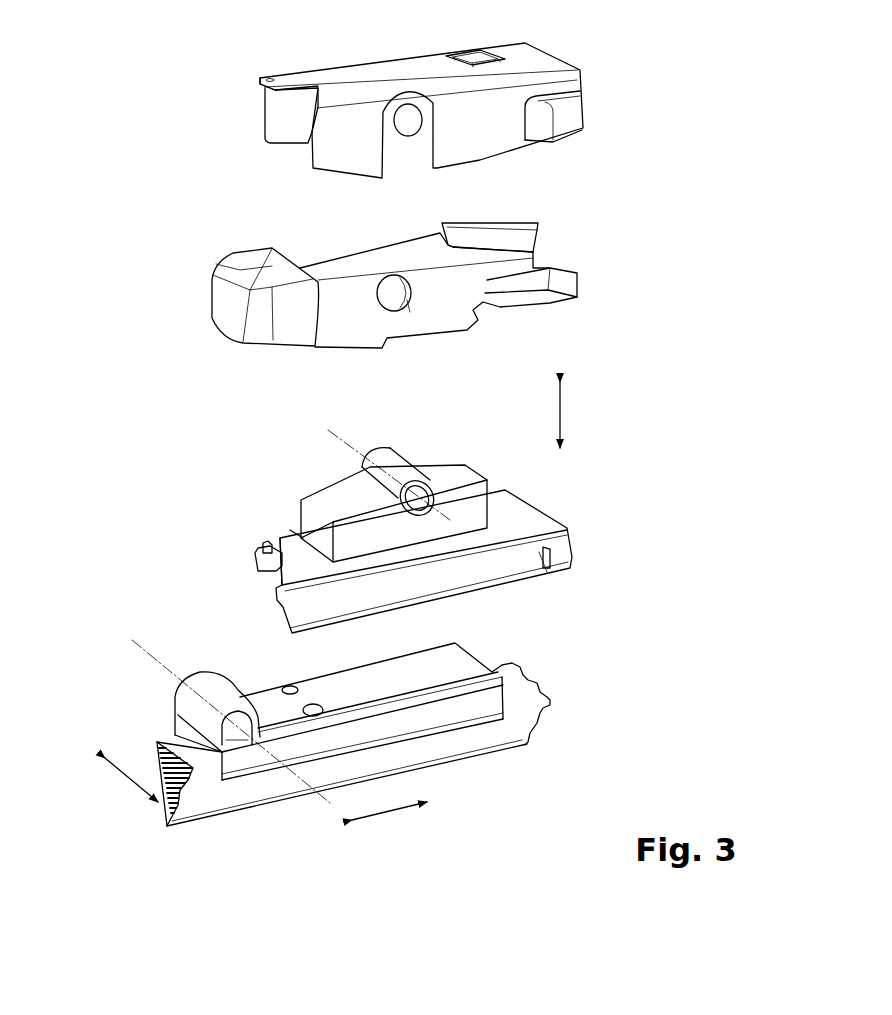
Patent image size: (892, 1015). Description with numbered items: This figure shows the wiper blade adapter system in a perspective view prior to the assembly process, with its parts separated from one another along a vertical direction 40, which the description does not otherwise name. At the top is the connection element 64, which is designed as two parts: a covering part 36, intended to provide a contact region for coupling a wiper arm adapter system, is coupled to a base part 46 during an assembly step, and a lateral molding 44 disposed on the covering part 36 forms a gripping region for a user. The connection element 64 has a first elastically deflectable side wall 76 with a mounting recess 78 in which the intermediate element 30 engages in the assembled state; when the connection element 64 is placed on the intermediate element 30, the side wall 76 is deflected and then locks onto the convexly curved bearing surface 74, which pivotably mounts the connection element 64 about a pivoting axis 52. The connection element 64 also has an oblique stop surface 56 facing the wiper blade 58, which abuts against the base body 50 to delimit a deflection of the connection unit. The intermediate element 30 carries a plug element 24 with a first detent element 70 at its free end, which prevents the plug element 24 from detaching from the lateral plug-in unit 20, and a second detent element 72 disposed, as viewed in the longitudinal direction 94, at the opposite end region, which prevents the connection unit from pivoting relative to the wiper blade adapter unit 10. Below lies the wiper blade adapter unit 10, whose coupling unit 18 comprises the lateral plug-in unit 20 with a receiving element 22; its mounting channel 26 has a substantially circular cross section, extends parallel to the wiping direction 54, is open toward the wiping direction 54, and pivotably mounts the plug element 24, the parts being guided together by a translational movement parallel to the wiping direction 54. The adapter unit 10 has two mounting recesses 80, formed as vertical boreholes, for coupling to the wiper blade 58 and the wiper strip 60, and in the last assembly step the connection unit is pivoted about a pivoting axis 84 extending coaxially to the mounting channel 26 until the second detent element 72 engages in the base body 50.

The wiper blade adapter unit 10 is at (535, 670).
The coupling unit 18 is at (240, 655).
The lateral plug-in unit 20 is at (152, 685).
The receiving element 22 is at (198, 680).
The plug element 24 is at (263, 565).
The mounting channel 26 is at (233, 730).
The intermediate element 30 is at (520, 517).
The covering part 36 is at (562, 73).
The vertical direction 40 is at (561, 413).
The lateral molding 44 is at (573, 121).
The base part 46 is at (442, 320).
The base body 50 is at (457, 663).
The pivoting axis 52 is at (328, 432).
The wiping direction 54 is at (132, 780).
The oblique stop surface 56 is at (288, 350).
The wiper blade 58 is at (478, 740).
The wiper strip 60 is at (155, 760).
The connection element 64 is at (573, 102).
The first detent element 70 is at (268, 545).
The second detent element 72 is at (570, 570).
The bearing surface 74 is at (402, 304).
The first side wall 76 is at (363, 320).
The mounting recess 78 is at (408, 308).
The mounting recesses 80 is at (290, 690).
The pivoting axis 84 is at (150, 655).
The longitudinal direction 94 is at (388, 813).